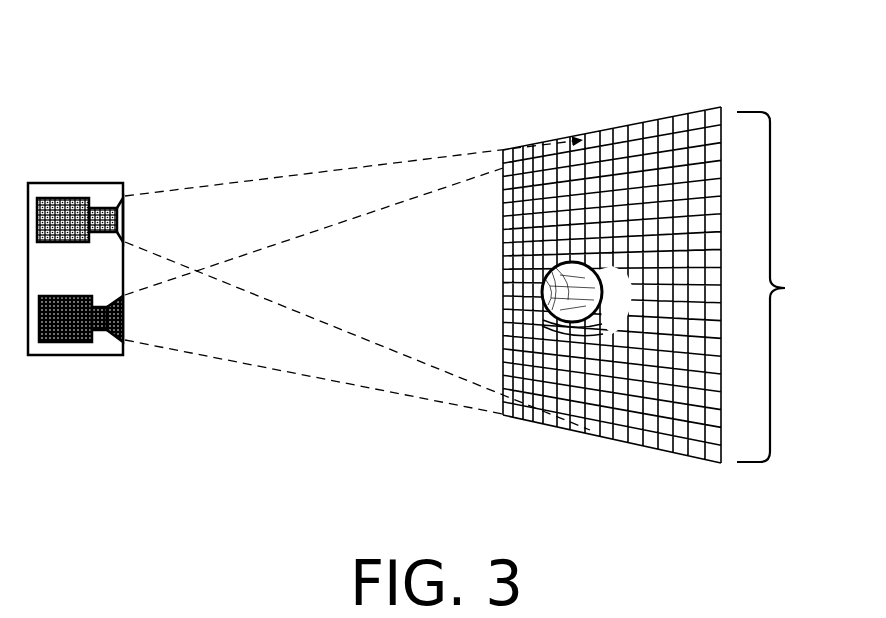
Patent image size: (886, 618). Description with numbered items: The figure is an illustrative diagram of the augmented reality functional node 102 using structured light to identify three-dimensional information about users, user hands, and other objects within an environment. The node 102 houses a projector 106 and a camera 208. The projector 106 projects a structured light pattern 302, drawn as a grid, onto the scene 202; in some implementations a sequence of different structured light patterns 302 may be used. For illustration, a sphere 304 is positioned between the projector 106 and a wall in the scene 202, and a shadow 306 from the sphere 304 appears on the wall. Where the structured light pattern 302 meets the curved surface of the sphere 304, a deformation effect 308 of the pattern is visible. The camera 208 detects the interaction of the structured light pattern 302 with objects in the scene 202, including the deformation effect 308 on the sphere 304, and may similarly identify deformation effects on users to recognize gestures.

The augmented reality functional node 102 is at (58, 356).
The projector 106 is at (63, 220).
The camera 208 is at (80, 335).
The scene 202 is at (790, 287).
The structured light pattern 302 is at (500, 167).
The sphere 304 is at (566, 258).
The shadow 306 is at (621, 270).
The deformation effect 308 is at (553, 317).